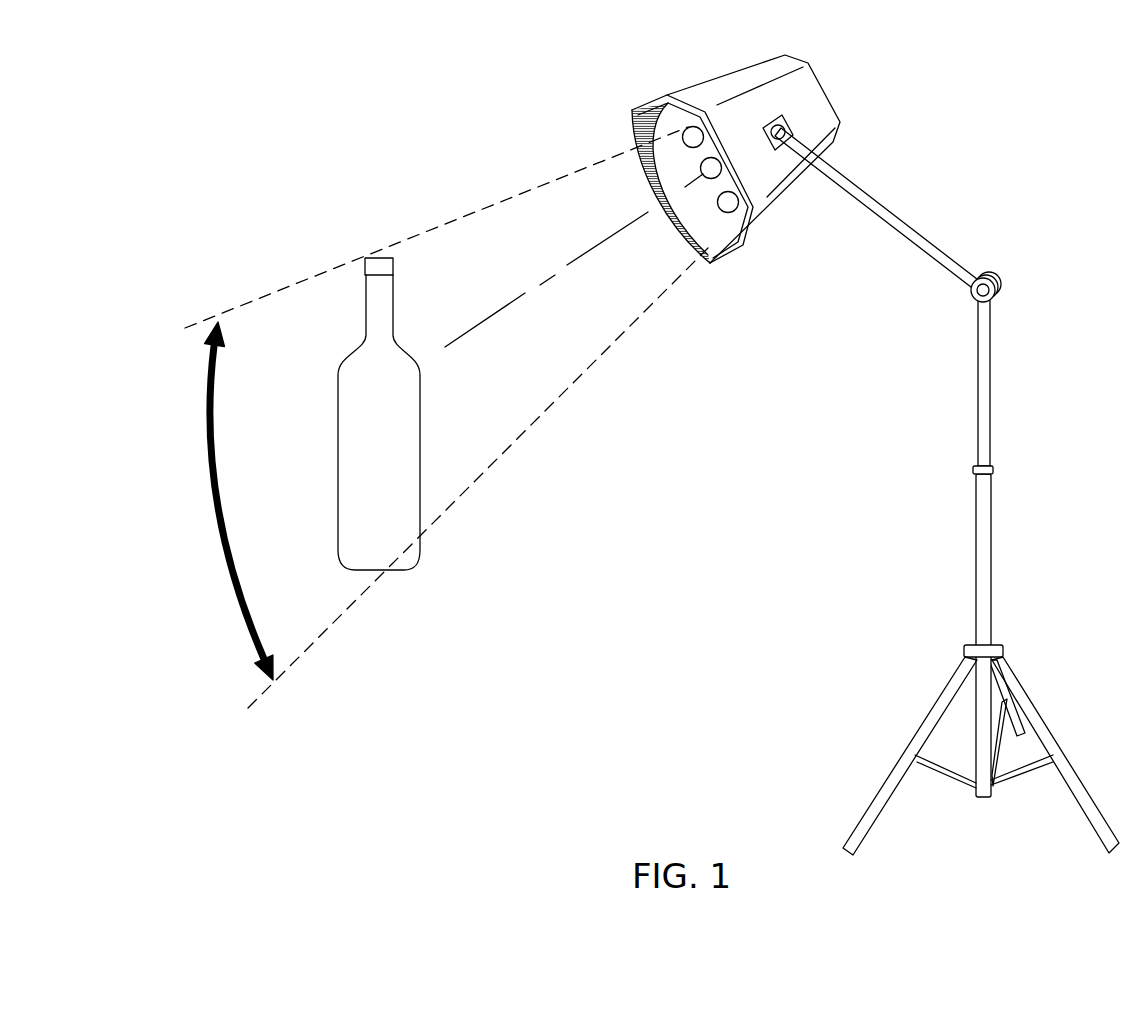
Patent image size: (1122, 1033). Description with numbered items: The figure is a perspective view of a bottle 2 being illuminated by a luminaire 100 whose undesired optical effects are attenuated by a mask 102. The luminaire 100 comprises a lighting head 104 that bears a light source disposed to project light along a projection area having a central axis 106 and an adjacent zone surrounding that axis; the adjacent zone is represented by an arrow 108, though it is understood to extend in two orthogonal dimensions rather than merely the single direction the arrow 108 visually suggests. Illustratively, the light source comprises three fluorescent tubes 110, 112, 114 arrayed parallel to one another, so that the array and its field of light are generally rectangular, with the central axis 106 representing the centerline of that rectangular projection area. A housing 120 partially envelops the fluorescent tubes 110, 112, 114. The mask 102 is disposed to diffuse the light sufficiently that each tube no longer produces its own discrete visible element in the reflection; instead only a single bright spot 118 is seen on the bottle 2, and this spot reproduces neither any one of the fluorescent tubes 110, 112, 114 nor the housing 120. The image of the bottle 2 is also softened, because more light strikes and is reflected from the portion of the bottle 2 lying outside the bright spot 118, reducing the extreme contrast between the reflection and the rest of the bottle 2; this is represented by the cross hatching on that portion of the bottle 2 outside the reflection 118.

The bottle 2 is at (382, 570).
The luminaire 100 is at (929, 197).
The mask 102 is at (652, 262).
The lighting head 104 is at (813, 105).
The central axis 106 is at (507, 305).
The arrow 108 is at (220, 450).
The fluorescent tube 110 is at (695, 137).
The fluorescent tube 112 is at (706, 172).
The fluorescent tube 114 is at (728, 203).
The single bright spot 118 is at (403, 358).
The housing 120 is at (782, 192).